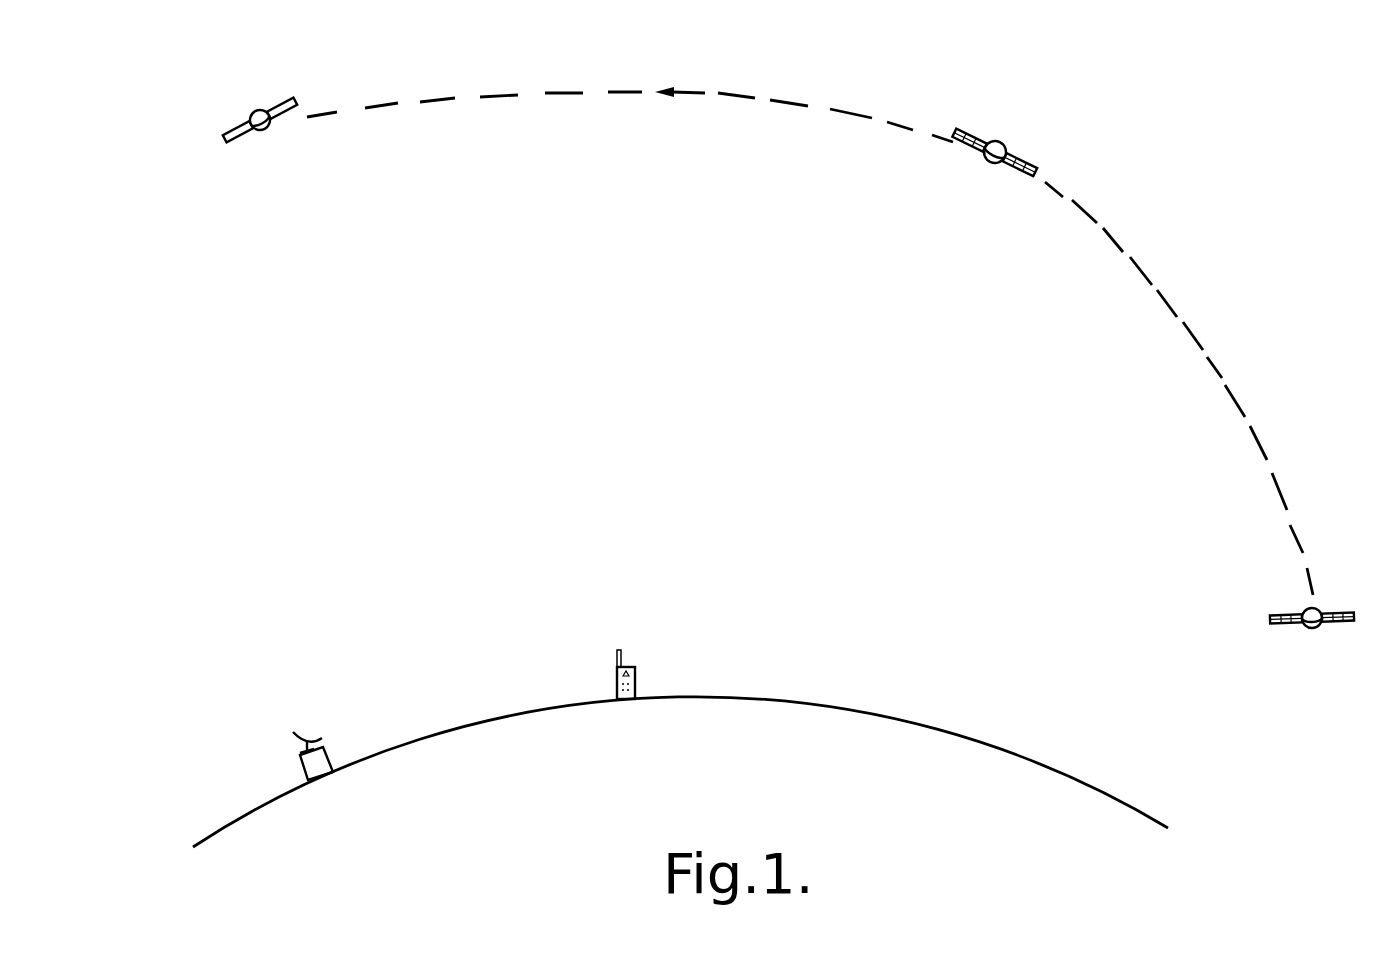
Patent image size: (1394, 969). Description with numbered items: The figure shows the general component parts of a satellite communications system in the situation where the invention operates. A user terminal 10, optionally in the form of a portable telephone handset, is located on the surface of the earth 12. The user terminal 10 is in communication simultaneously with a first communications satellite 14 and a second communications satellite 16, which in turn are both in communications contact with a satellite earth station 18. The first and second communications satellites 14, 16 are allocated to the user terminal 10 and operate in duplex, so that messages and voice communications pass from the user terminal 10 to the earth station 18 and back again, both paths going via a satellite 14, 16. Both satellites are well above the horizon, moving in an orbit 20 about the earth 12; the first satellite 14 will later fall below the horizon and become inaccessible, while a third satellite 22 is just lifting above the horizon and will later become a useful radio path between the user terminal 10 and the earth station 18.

The user terminal 10 is at (638, 692).
The earth 12 is at (972, 740).
The first communications satellite 14 is at (262, 112).
The second communications satellite 16 is at (1005, 146).
The satellite earth station 18 is at (323, 752).
The orbit 20 is at (753, 98).
The third satellite 22 is at (1320, 608).